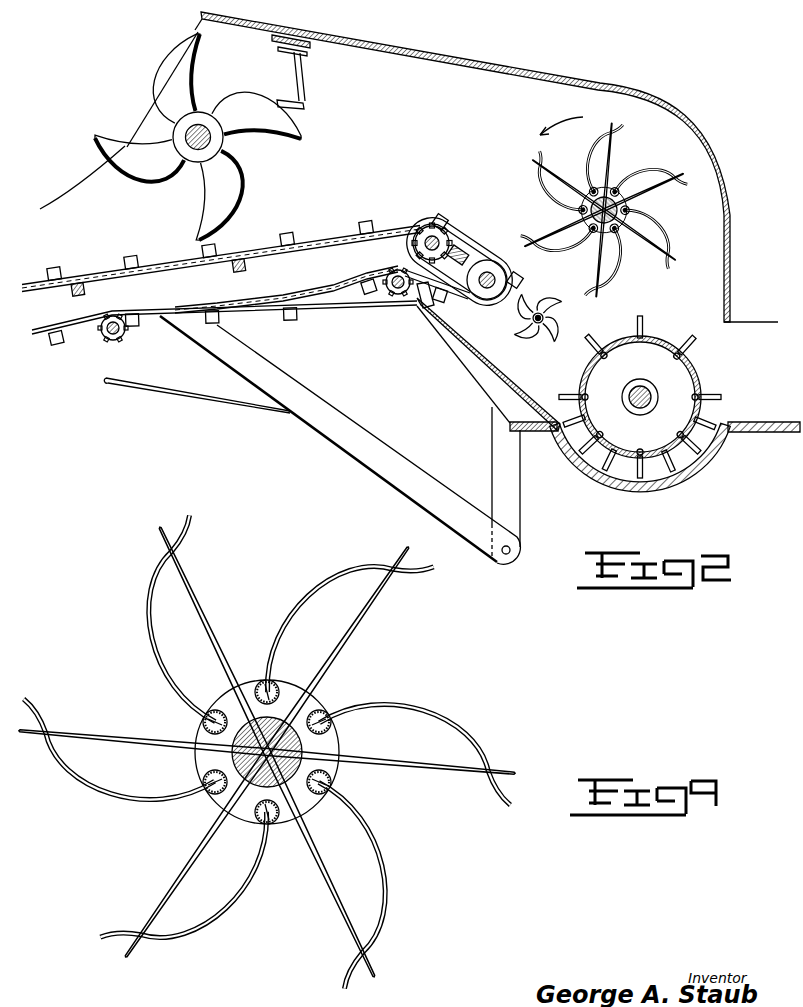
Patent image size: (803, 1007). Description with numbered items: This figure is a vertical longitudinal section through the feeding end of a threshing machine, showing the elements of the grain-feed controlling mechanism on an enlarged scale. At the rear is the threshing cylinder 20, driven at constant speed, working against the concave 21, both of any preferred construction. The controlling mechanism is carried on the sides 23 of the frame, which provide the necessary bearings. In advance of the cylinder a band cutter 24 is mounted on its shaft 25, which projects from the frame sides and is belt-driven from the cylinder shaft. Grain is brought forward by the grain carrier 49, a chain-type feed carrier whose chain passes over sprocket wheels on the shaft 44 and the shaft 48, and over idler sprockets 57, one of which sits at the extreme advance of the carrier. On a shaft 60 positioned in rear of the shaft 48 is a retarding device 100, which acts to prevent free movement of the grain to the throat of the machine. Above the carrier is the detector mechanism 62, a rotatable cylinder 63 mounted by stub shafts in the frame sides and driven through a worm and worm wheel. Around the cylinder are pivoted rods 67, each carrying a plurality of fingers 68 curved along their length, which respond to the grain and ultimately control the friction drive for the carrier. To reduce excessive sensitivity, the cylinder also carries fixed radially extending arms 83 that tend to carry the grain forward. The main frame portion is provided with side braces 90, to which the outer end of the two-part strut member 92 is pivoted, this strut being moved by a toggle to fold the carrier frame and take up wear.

In FIG. 2, the threshing cylinder 20 is at (617, 450).
In FIG. 2, the concave 21 is at (631, 492).
In FIG. 2, the sides of the frame 23 is at (409, 167).
In FIG. 2, the band cutter 24 is at (224, 150).
In FIG. 2, the shaft 25 is at (203, 128).
In FIG. 2, the shaft 44 is at (437, 233).
In FIG. 2, the shaft 48 is at (504, 271).
In FIG. 2, the grain carrier 49 is at (328, 242).
In FIG. 2, the idler sprockets 57 is at (119, 335).
In FIG. 2, the shaft 60 is at (540, 316).
In FIG. 2, the detector mechanism 62 is at (599, 157).
In FIG. 9, the detector mechanism 62 is at (341, 622).
In FIG. 2, the cylinder 63 is at (632, 204).
In FIG. 9, the cylinder 63 is at (234, 733).
In FIG. 2, the rods 67 is at (581, 216).
In FIG. 9, the rods 67 is at (280, 695).
In FIG. 2, the fingers 68 is at (547, 194).
In FIG. 9, the fingers 68 is at (173, 673).
In FIG. 2, the radially extending arms 83 is at (658, 246).
In FIG. 9, the radially extending arms 83 is at (97, 750).
In FIG. 2, the side braces 90 is at (499, 487).
In FIG. 2, the strut member 92 is at (203, 401).
In FIG. 2, the retarding device 100 is at (520, 341).